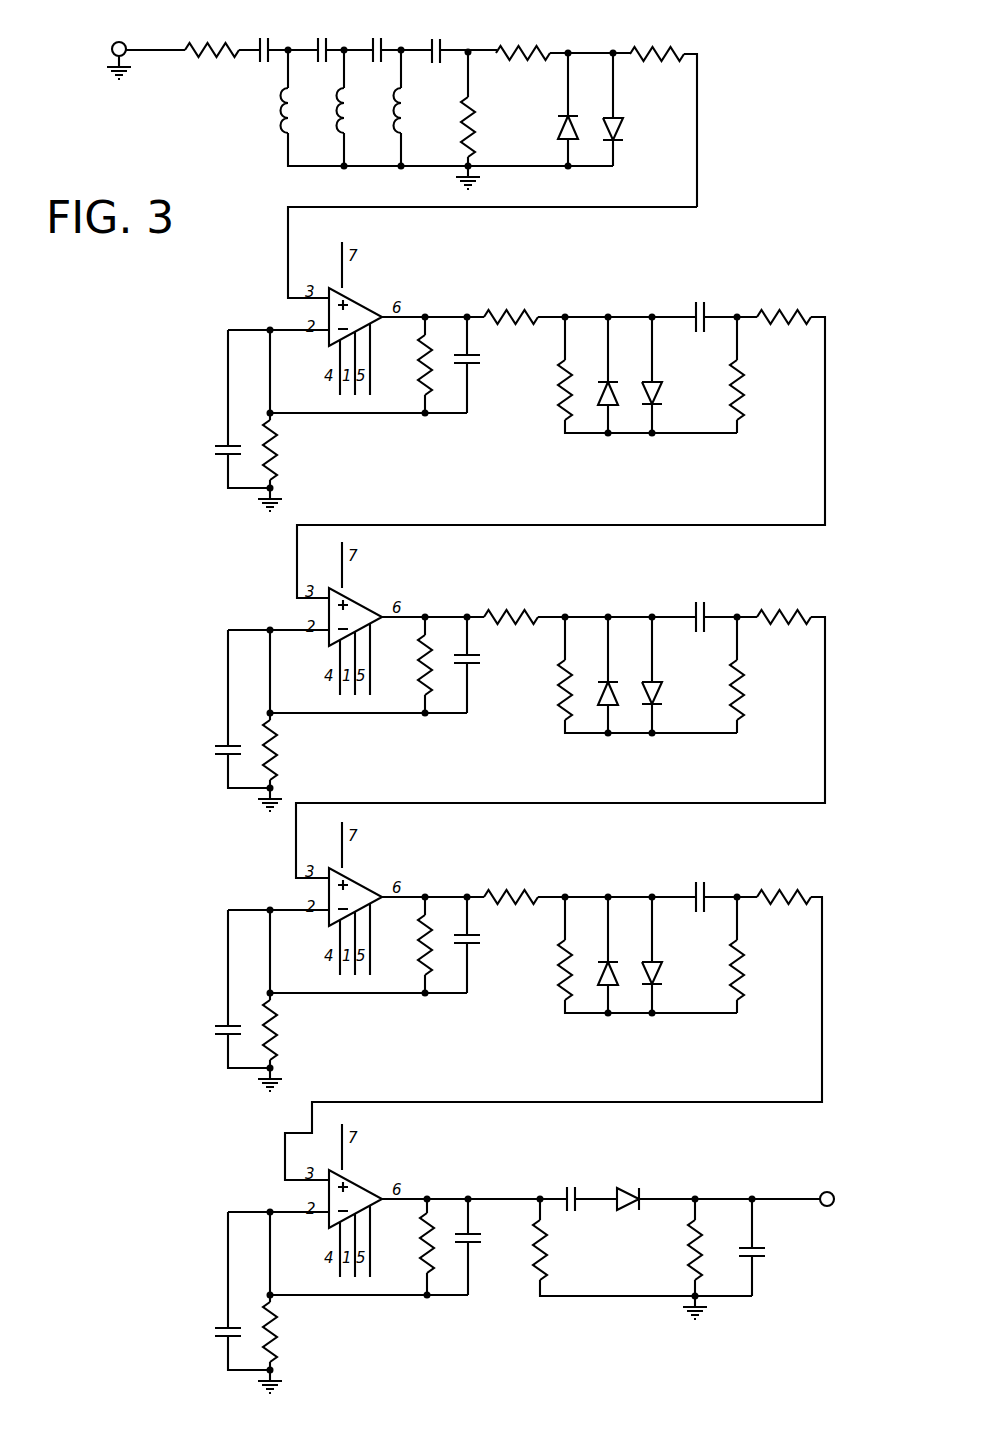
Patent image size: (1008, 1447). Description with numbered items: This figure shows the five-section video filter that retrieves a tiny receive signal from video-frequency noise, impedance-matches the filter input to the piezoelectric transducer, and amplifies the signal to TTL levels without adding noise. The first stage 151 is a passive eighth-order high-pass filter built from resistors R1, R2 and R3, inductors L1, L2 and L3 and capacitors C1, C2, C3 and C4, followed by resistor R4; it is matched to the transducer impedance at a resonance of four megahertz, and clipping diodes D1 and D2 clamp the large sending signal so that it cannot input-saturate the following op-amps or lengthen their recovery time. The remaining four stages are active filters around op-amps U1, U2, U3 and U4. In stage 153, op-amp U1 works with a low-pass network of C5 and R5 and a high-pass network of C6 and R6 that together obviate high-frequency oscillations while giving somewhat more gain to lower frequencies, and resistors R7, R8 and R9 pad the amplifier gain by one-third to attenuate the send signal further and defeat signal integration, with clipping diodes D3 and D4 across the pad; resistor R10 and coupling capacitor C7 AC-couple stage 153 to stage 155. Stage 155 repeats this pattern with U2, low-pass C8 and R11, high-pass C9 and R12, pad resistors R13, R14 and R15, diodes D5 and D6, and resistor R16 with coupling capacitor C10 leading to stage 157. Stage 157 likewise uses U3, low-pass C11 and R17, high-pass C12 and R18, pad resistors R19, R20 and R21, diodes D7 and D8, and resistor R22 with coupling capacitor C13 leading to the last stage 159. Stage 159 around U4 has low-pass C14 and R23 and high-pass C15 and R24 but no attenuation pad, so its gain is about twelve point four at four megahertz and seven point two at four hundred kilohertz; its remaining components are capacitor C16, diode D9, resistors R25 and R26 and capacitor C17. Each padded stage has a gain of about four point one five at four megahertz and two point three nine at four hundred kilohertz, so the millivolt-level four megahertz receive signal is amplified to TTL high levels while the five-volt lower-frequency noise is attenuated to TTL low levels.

The first stage 151 is at (424, 105).
The second stage 153 is at (504, 402).
The third stage 155 is at (507, 710).
The fourth stage 157 is at (507, 1001).
The last stage 159 is at (527, 1258).
The resistor R1 is at (212, 36).
The resistor R2 is at (486, 143).
The resistor R3 is at (523, 39).
The resistor R4 is at (657, 38).
The resistor R5 is at (285, 465).
The resistor R6 is at (409, 365).
The resistor R7 is at (511, 305).
The resistor R8 is at (548, 390).
The resistor R9 is at (758, 390).
The resistor R10 is at (791, 303).
The resistor R11 is at (294, 765).
The resistor R12 is at (409, 665).
The resistor R13 is at (513, 605).
The resistor R14 is at (546, 690).
The resistor R15 is at (762, 690).
The resistor R16 is at (752, 592).
The resistor R17 is at (295, 1045).
The resistor R18 is at (409, 945).
The resistor R19 is at (513, 884).
The resistor R20 is at (537, 970).
The resistor R21 is at (765, 968).
The resistor R22 is at (797, 850).
The resistor R23 is at (295, 1347).
The resistor R24 is at (410, 1243).
The resistor R25 is at (569, 1250).
The resistor R26 is at (668, 1269).
The capacitor C1 is at (263, 34).
The capacitor C2 is at (321, 33).
The capacitor C3 is at (376, 32).
The capacitor C4 is at (438, 34).
The capacitor C5 is at (212, 434).
The capacitor C6 is at (486, 356).
The capacitor C7 is at (718, 308).
The capacitor C8 is at (205, 741).
The capacitor C9 is at (483, 663).
The capacitor C10 is at (682, 609).
The capacitor C11 is at (202, 1019).
The capacitor C12 is at (488, 939).
The capacitor C13 is at (681, 888).
The capacitor C14 is at (200, 1324).
The capacitor C15 is at (489, 1231).
The capacitor C16 is at (562, 1185).
The capacitor C17 is at (779, 1262).
The inductor L1 is at (301, 110).
The inductor L2 is at (358, 110).
The inductor L3 is at (420, 110).
The clipping diode D1 is at (581, 114).
The clipping diode D2 is at (629, 116).
The clipping diode D3 is at (621, 377).
The clipping diode D4 is at (667, 378).
The clipping diode D5 is at (621, 677).
The clipping diode D6 is at (667, 678).
The clipping diode D7 is at (621, 957).
The clipping diode D8 is at (665, 957).
The diode D9 is at (637, 1187).
The operational amplifier U1 is at (352, 306).
The operational amplifier U2 is at (352, 606).
The operational amplifier U3 is at (354, 886).
The operational amplifier U4 is at (356, 1185).